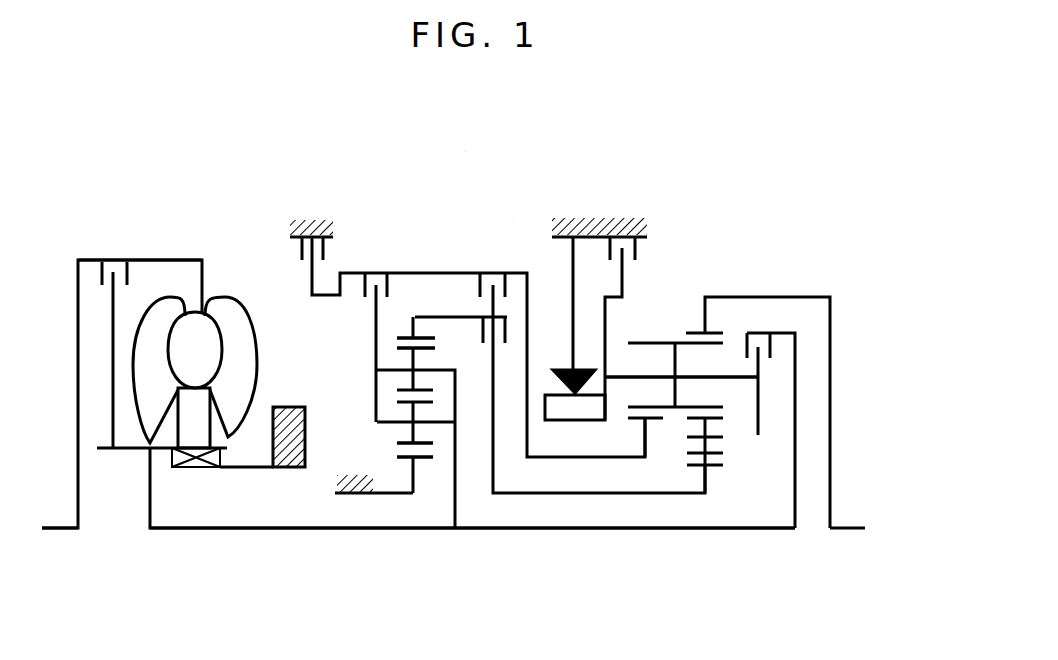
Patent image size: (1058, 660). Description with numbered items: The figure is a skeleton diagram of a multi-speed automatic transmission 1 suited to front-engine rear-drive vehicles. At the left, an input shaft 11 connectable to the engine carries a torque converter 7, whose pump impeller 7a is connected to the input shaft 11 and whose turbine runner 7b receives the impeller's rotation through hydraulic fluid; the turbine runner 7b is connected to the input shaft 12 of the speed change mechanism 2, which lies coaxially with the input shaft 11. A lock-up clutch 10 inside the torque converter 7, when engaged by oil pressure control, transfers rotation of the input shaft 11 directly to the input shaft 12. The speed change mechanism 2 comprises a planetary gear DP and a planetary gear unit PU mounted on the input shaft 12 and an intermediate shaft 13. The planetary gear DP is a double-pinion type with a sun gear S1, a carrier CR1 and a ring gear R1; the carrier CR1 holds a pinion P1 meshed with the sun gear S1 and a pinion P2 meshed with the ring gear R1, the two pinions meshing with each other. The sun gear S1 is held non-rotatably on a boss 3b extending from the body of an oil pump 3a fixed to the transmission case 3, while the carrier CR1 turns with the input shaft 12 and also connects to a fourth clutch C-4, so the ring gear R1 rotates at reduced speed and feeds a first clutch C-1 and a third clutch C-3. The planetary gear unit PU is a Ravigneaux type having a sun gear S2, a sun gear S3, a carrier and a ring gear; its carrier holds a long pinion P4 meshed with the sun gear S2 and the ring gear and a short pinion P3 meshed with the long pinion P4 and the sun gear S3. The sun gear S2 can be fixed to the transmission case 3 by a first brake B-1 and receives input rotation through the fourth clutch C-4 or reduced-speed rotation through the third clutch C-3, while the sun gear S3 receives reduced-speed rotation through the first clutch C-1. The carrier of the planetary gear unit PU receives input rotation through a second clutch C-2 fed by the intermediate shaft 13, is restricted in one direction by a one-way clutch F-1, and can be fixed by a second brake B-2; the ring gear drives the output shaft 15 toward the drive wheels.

The automatic transmission 1 is at (465, 155).
The speed change mechanism 2 is at (513, 220).
The transmission case 3 is at (330, 237).
The oil pump 3a is at (285, 405).
The boss 3b is at (345, 475).
The torque converter 7 is at (222, 288).
The pump impeller 7a is at (230, 322).
The turbine runner 7b is at (163, 317).
The lock-up clutch 10 is at (113, 258).
The input shaft 11 is at (63, 527).
The input shaft 12 is at (277, 525).
The intermediate shaft 13 is at (665, 530).
The output shaft 15 is at (838, 525).
The first brake B-1 is at (472, 326).
The second brake B-2 is at (621, 308).
The first clutch C-1 is at (461, 317).
The second clutch C-2 is at (770, 418).
The third clutch C-3 is at (590, 372).
The fourth clutch C-4 is at (377, 336).
The one-way clutch F-1 is at (575, 340).
The planetary gear DP is at (418, 312).
The planetary gear unit PU is at (647, 330).
The ring gear R1 is at (408, 333).
The carrier CR1 is at (377, 388).
The pinion P1 is at (412, 443).
The pinion P2 is at (428, 350).
The short pinion P3 is at (717, 453).
The long pinion P4 is at (677, 347).
The sun gear S1 is at (422, 460).
The sun gear S2 is at (653, 422).
The sun gear S3 is at (713, 468).